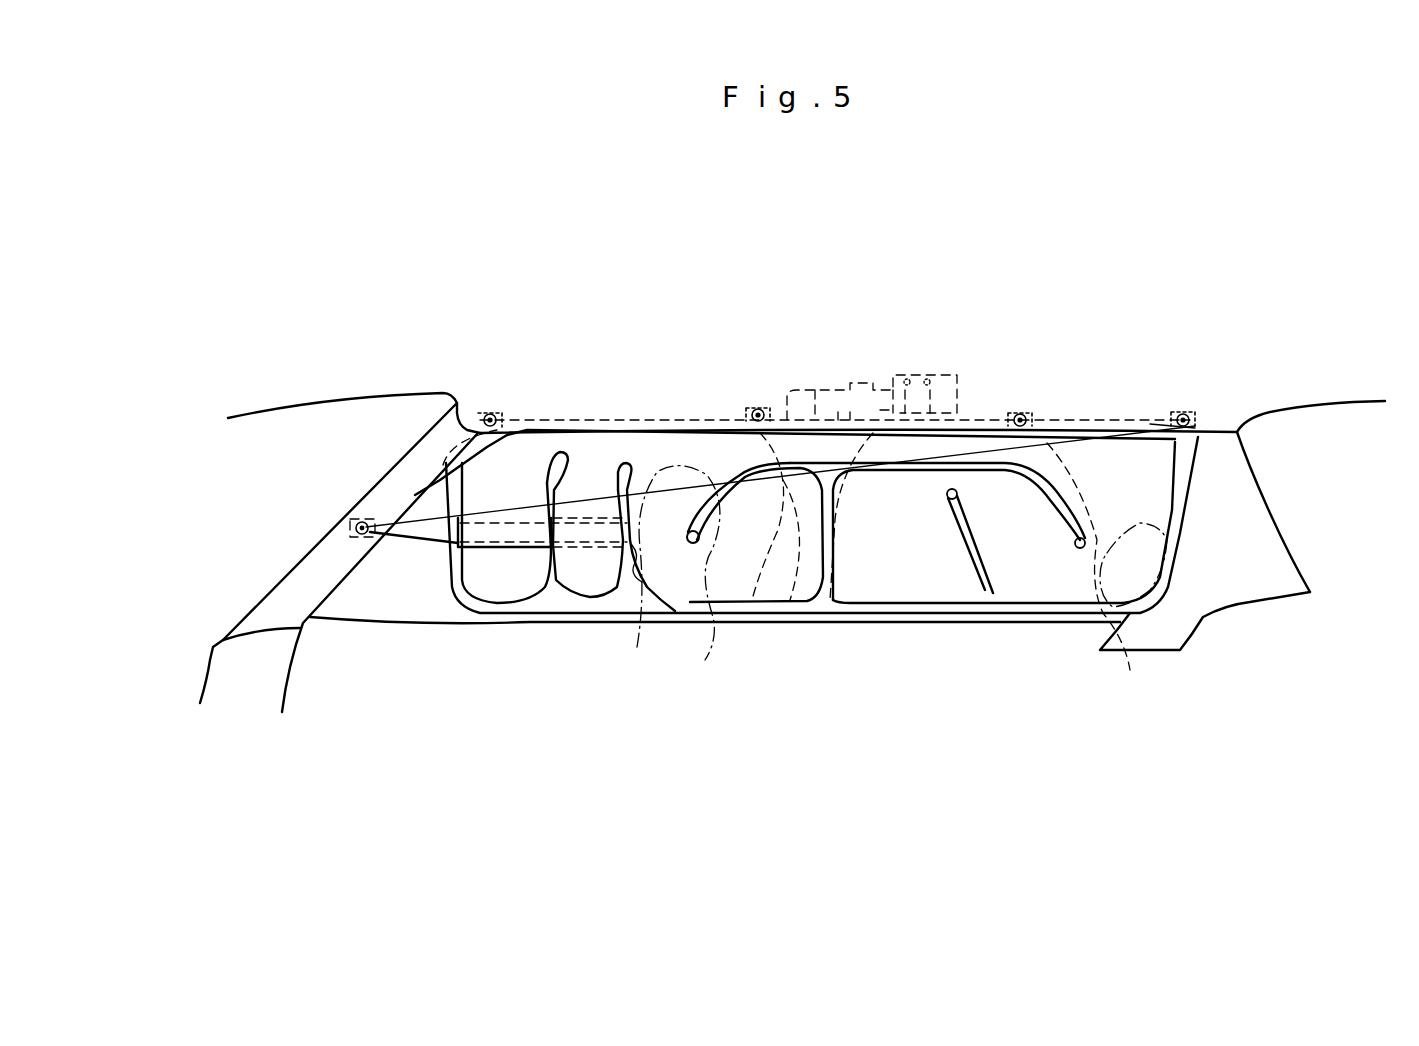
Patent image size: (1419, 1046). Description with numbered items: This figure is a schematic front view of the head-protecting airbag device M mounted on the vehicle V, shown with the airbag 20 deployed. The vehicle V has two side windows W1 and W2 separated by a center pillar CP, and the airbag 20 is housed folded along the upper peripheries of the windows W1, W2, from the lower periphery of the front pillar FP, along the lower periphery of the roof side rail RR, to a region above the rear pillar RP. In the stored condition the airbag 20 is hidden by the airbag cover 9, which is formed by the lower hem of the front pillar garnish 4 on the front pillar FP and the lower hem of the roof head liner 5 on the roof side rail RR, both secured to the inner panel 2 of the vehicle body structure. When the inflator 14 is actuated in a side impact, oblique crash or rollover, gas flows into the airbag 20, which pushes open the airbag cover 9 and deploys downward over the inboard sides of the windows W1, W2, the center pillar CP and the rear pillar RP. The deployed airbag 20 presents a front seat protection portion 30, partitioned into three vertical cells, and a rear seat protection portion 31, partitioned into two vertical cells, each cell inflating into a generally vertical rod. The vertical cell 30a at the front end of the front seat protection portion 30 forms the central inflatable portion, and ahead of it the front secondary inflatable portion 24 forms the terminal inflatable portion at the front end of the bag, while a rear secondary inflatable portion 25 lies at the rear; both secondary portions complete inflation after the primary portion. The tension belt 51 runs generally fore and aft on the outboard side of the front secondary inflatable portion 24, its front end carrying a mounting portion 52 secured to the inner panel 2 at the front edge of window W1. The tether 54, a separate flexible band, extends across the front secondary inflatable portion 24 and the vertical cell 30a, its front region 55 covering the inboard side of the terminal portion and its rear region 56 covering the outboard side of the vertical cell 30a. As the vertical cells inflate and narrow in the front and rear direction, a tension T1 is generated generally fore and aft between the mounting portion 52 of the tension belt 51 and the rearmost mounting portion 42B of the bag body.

The inner panel 2 is at (543, 413).
The front pillar garnish 4 is at (385, 488).
The roof head liner 5 is at (995, 420).
The airbag cover 9 is at (667, 426).
The inflator 14 is at (950, 383).
The airbag 20 is at (1180, 588).
The front secondary inflatable portion 24 is at (512, 605).
The rear secondary inflatable portion 25 is at (903, 597).
The front seat protection portion 30 is at (735, 607).
The vertical cell 30a is at (597, 592).
The rear seat protection portion 31 is at (1070, 613).
The mounting portion 42B is at (1188, 413).
The tension belt 51 is at (412, 548).
The mounting portion 52 is at (358, 522).
The tether 54 is at (488, 556).
The front region 55 is at (507, 590).
The rear region 56 is at (577, 533).
The front pillar FP is at (292, 545).
The rear pillar RP is at (1257, 537).
The roof side rail RR is at (1095, 420).
The head-protecting airbag device M is at (1238, 397).
The side window W1 is at (437, 627).
The side window W2 is at (950, 620).
The tension T1 is at (637, 620).
The center pillar CP is at (847, 570).
The vehicle V is at (165, 720).